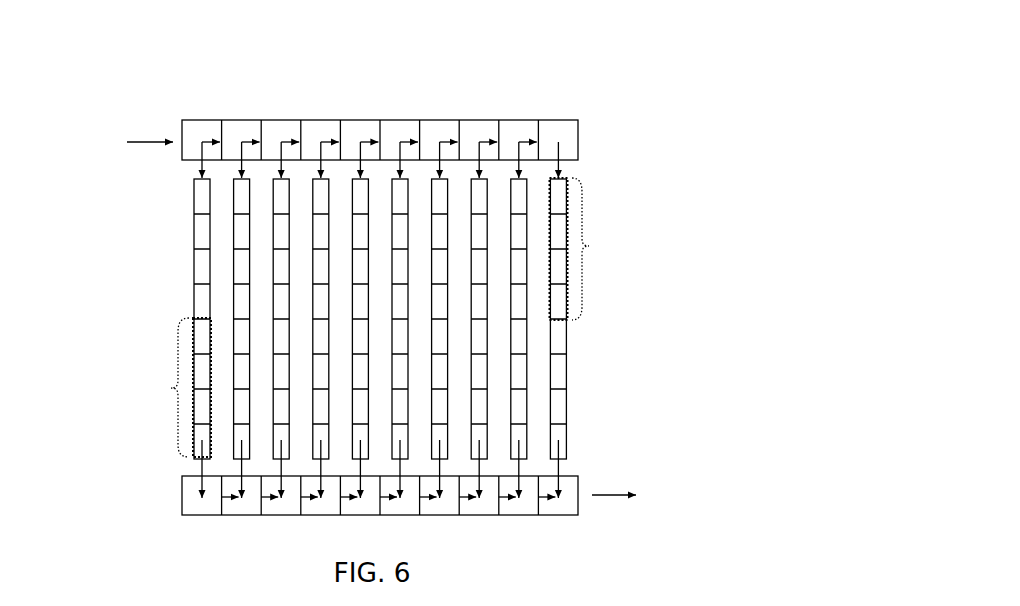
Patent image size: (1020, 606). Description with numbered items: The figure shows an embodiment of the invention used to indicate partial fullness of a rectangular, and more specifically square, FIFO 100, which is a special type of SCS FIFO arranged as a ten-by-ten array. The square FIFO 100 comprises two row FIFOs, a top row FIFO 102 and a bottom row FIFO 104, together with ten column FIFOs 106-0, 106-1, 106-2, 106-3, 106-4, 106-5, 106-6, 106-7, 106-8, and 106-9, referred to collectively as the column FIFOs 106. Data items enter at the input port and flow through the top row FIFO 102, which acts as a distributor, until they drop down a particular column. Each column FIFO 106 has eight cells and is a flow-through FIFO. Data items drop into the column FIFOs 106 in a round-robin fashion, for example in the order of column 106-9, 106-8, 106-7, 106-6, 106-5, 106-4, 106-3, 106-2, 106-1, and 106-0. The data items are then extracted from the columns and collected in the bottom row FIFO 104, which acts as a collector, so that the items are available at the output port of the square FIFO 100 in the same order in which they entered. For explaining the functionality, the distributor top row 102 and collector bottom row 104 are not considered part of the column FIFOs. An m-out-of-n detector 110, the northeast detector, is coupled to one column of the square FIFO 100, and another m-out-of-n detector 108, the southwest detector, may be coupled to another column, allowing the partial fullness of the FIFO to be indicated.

The square FIFO 100 is at (603, 68).
The top row FIFO 102 is at (580, 130).
The bottom row FIFO 104 is at (558, 514).
The column FIFOs 106 is at (568, 372).
The column FIFO 106-0 is at (194, 268).
The column FIFO 106-1 is at (234, 268).
The column FIFO 106-2 is at (273, 268).
The column FIFO 106-3 is at (313, 268).
The column FIFO 106-4 is at (352, 268).
The column FIFO 106-5 is at (392, 268).
The column FIFO 106-6 is at (432, 268).
The column FIFO 106-7 is at (471, 268).
The column FIFO 106-8 is at (511, 268).
The column FIFO 106-9 is at (550, 268).
The m-out-of-n detector 108 is at (103, 413).
The m-out-of-n detector 110 is at (652, 272).